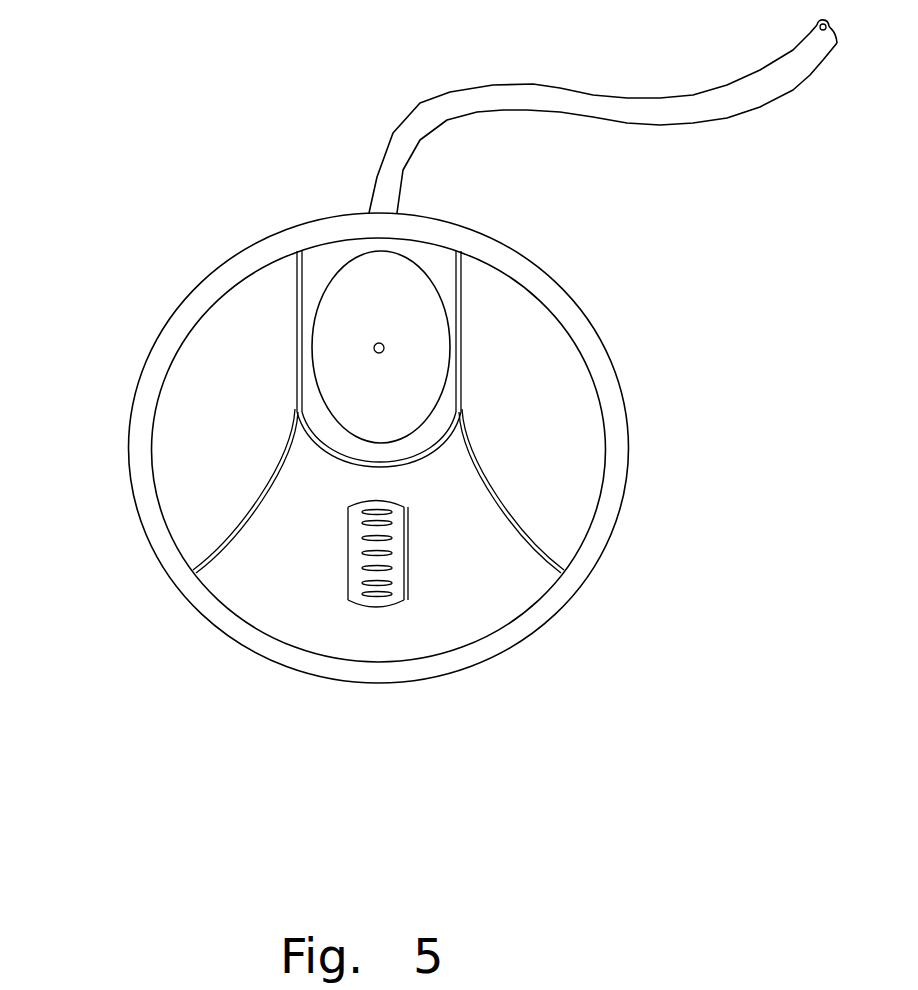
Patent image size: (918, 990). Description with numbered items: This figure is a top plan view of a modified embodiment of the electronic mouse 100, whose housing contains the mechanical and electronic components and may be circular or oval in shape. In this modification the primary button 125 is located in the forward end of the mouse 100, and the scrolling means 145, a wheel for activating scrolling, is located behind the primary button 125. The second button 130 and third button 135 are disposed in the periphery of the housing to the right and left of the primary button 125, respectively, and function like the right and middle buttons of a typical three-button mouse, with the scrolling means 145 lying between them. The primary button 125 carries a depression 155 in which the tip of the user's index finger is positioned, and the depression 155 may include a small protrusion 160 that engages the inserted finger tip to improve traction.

The electronic mouse 100 is at (165, 672).
The primary button 125 is at (300, 233).
The second button 130 is at (215, 359).
The third button 135 is at (540, 360).
The scrolling means 145 is at (418, 605).
The depression 155 is at (402, 297).
The protrusion 160 is at (381, 353).